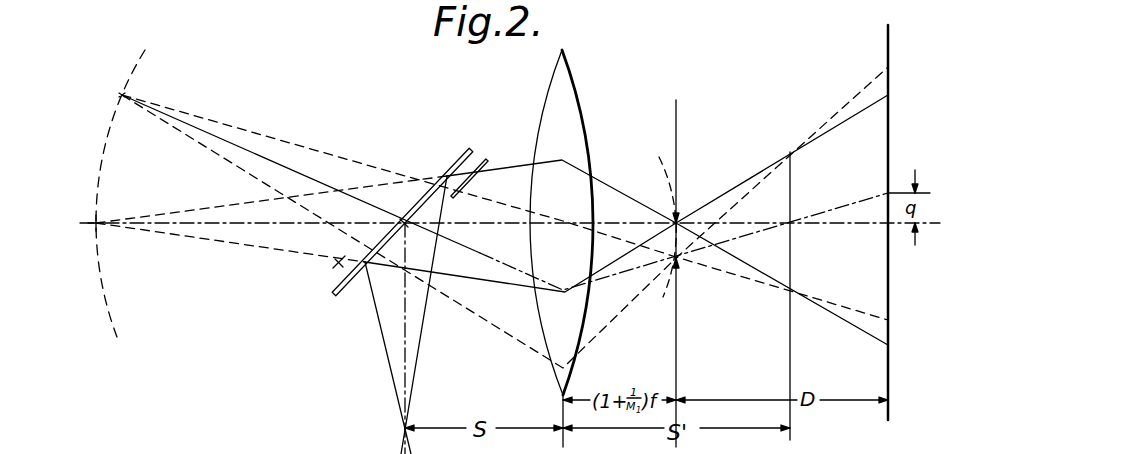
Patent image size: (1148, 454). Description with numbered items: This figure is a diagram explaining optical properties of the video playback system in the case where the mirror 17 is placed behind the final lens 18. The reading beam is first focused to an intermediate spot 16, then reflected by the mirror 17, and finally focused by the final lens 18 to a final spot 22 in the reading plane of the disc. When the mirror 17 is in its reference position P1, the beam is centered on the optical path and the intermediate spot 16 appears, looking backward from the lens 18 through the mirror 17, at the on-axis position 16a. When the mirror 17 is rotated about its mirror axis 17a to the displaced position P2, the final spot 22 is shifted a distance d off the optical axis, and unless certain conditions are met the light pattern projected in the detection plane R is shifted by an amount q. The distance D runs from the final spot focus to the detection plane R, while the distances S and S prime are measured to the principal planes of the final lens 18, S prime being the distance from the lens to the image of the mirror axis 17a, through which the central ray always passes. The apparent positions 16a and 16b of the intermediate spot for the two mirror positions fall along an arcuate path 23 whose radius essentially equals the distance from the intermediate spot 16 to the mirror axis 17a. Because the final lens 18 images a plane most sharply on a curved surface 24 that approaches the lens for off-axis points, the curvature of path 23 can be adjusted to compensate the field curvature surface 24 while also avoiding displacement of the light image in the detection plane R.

The intermediate spot 16 is at (402, 430).
The apparent position of intermediate spot (reference mirror position) 16a is at (96, 226).
The apparent position of intermediate spot (displaced mirror position) 16b is at (122, 96).
The mirror 17 is at (409, 210).
The mirror axis 17a is at (408, 228).
The final lens 18 is at (573, 80).
The final spot 22 is at (670, 222).
The arcuate path 23 is at (136, 67).
The curved surface 24 is at (670, 175).
The detection plane R is at (889, 52).
The reference mirror position P1 is at (447, 170).
The displaced mirror position P2 is at (481, 165).